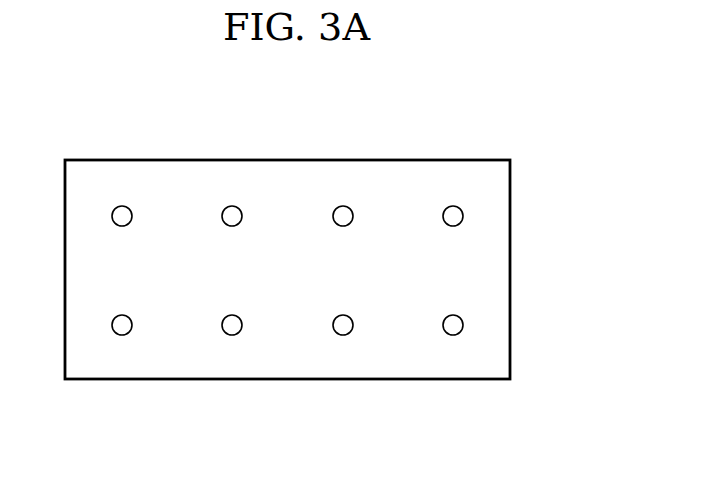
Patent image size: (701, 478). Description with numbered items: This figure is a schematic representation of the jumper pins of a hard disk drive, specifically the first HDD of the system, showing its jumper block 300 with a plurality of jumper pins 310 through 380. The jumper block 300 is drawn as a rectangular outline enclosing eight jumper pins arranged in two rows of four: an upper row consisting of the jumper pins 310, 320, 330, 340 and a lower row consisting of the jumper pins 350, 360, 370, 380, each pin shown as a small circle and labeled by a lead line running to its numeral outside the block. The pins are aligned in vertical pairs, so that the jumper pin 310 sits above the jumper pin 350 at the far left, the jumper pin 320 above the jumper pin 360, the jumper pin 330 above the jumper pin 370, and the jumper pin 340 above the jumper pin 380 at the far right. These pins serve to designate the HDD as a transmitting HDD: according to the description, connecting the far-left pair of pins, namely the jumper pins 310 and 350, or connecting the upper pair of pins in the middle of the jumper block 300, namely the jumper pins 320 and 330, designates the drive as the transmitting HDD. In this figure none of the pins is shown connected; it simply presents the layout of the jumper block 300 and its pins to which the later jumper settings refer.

The jumper block 300 is at (510, 270).
The jumper pin 310 is at (122, 206).
The jumper pin 320 is at (232, 206).
The jumper pin 330 is at (343, 206).
The jumper pin 340 is at (453, 206).
The jumper pin 350 is at (122, 335).
The jumper pin 360 is at (232, 335).
The jumper pin 370 is at (343, 335).
The jumper pin 380 is at (453, 335).